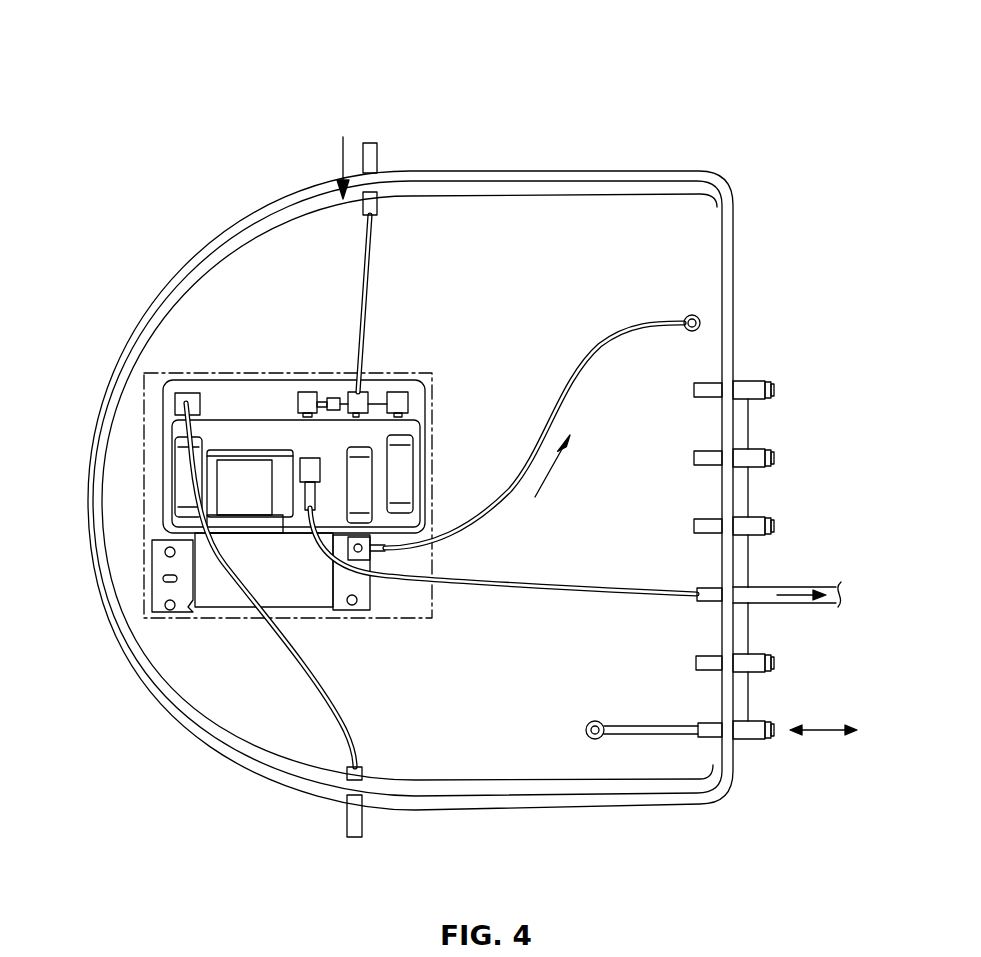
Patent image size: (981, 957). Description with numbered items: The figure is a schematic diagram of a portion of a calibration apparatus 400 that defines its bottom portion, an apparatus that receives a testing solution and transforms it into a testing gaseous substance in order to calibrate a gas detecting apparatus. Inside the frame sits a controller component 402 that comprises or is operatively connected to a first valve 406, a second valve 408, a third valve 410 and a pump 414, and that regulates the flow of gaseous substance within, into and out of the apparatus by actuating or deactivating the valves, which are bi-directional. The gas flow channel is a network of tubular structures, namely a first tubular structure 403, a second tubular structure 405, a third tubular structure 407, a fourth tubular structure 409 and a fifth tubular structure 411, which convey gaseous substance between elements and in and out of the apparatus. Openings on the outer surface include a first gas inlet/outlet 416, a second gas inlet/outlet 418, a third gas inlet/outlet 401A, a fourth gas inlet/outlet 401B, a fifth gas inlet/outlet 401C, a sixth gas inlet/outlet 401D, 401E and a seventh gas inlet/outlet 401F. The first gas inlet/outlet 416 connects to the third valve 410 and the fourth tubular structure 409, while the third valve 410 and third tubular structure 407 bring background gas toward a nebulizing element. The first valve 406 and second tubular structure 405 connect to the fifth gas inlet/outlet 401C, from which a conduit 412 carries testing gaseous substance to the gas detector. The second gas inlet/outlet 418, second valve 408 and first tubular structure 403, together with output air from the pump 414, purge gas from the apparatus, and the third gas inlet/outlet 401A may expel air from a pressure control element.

The calibration apparatus 400 is at (691, 100).
The third gas inlet/outlet 401A is at (778, 732).
The fourth gas inlet/outlet 401B is at (778, 663).
The fifth gas inlet/outlet 401C is at (750, 600).
The sixth gas inlet/outlet 401D is at (773, 526).
The sixth gas inlet/outlet 401E is at (773, 458).
The seventh gas inlet/outlet 401F is at (773, 390).
The controller component 402 is at (143, 503).
The first tubular structure 403 is at (302, 673).
The second tubular structure 405 is at (382, 578).
The first valve 406 is at (400, 495).
The third tubular structure 407 is at (510, 492).
The second valve 408 is at (180, 472).
The fourth tubular structure 409 is at (362, 323).
The third valve 410 is at (345, 454).
The fifth tubular structure 411 is at (642, 732).
The conduit 412 is at (802, 587).
The pump 414 is at (240, 523).
The first gas inlet/outlet 416 is at (370, 157).
The second gas inlet/outlet 418 is at (350, 817).